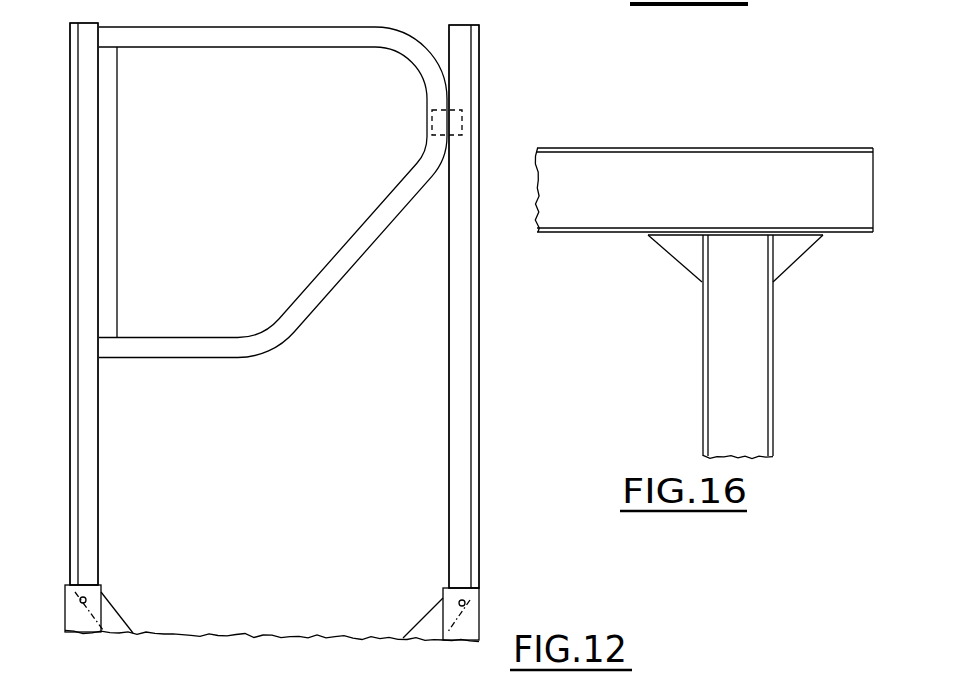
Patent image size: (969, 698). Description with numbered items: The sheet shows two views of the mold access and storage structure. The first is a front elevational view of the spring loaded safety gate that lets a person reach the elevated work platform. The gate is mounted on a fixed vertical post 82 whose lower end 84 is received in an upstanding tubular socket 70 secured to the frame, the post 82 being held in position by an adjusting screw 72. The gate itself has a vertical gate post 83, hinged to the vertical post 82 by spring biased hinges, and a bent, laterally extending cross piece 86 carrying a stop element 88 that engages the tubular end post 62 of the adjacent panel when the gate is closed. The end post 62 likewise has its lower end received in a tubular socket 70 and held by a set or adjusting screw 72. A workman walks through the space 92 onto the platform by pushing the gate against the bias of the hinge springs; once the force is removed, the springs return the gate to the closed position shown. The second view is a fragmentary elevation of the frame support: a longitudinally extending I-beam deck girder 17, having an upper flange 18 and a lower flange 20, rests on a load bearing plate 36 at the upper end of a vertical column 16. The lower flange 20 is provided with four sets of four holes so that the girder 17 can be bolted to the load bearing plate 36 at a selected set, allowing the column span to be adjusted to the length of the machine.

In FIG. 16, the column 16 is at (700, 338).
In FIG. 16, the I-beam deck girder 17 is at (651, 163).
In FIG. 16, the upper flange 18 is at (598, 148).
In FIG. 16, the lower flange 20 is at (572, 230).
In FIG. 16, the load bearing plate 36 is at (814, 235).
In FIG. 12, the tubular end post 62 is at (482, 64).
In FIG. 12, the tubular socket 70 is at (100, 616).
In FIG. 12, the adjusting screw 72 is at (88, 600).
In FIG. 12, the vertical post 82 is at (71, 400).
In FIG. 12, the gate post 83 is at (118, 152).
In FIG. 12, the lower end 84 is at (92, 514).
In FIG. 12, the cross piece 86 is at (337, 268).
In FIG. 12, the stop element 88 is at (431, 118).
In FIG. 12, the space 92 is at (428, 437).